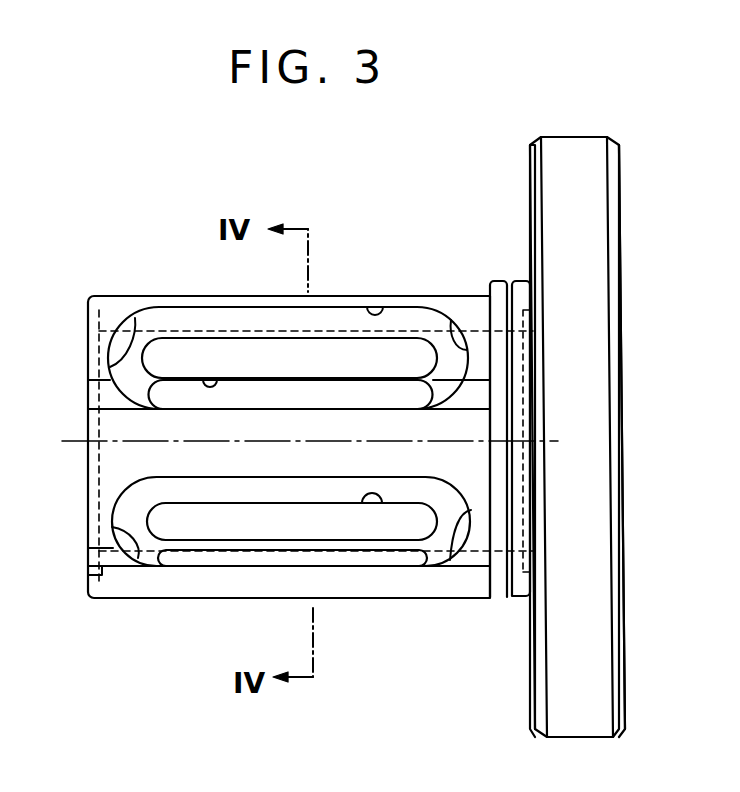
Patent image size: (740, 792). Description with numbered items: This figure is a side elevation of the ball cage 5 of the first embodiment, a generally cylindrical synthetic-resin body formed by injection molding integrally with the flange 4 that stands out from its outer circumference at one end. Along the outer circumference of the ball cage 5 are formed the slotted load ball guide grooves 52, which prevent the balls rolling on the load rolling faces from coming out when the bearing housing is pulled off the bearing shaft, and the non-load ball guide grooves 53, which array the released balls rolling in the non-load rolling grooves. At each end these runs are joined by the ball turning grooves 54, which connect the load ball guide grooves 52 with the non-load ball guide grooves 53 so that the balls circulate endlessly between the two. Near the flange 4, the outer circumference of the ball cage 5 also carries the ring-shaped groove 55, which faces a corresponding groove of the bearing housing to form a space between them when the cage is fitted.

The flange 4 is at (598, 210).
The ball cage 5 is at (96, 606).
The load ball guide groove 52 is at (200, 380).
The non-load ball guide groove 53 is at (383, 307).
The ball turning groove 54 is at (135, 318).
The ring-shaped groove 55 is at (512, 287).